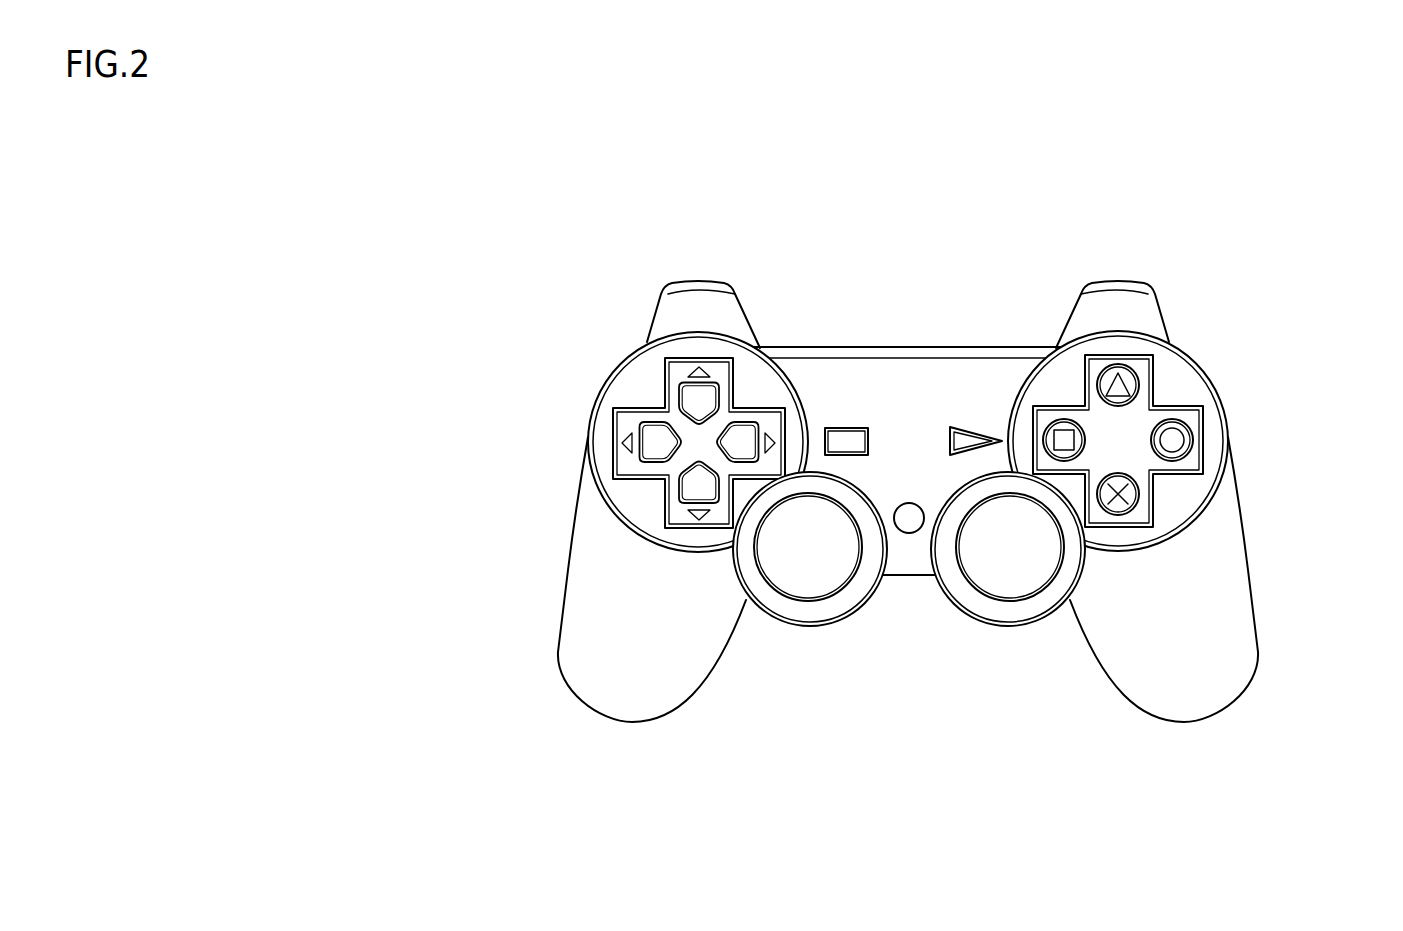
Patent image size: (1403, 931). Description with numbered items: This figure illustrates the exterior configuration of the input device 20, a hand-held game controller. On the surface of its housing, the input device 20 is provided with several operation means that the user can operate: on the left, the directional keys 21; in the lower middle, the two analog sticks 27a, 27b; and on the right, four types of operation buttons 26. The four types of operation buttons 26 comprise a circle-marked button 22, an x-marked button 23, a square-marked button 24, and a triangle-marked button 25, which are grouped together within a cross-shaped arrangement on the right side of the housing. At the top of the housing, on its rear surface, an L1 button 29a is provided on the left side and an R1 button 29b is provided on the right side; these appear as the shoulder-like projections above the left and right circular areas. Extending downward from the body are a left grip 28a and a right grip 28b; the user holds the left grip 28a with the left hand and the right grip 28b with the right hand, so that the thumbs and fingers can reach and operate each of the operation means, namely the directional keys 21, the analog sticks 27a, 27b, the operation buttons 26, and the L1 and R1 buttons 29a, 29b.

The input device 20 is at (1297, 182).
The directional keys 21 is at (633, 418).
The circle-marked button 22 is at (1183, 425).
The x-marked button 23 is at (1130, 493).
The square-marked button 24 is at (1078, 440).
The triangle-marked button 25 is at (1130, 380).
The operation buttons 26 is at (1333, 324).
The analog stick 27a is at (818, 575).
The analog stick 27b is at (1020, 575).
The left grip 28a is at (628, 688).
The right grip 28b is at (1202, 678).
The L1 button 29a is at (693, 281).
The R1 button 29b is at (1113, 281).